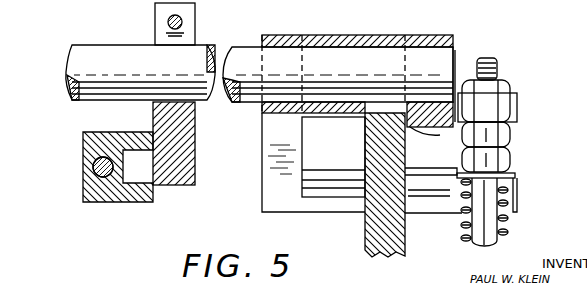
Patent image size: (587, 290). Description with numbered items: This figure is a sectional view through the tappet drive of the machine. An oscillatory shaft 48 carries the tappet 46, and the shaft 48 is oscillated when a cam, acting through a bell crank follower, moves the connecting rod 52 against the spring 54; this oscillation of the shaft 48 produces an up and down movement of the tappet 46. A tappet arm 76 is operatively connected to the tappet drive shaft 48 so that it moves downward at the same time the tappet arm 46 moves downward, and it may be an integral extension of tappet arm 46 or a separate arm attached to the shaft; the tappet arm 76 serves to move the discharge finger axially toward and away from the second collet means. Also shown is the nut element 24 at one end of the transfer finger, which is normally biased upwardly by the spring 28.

The oscillatory shaft 48 is at (104, 58).
The connecting rod 52 is at (93, 161).
The spring 54 is at (84, 190).
The tappet arm 76 is at (330, 206).
The nut element 24 is at (492, 106).
The tappet 46 is at (510, 104).
The spring 28 is at (462, 240).